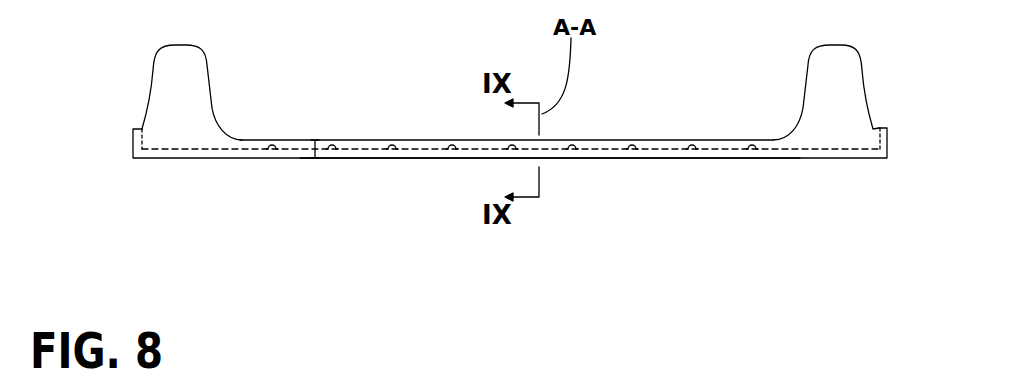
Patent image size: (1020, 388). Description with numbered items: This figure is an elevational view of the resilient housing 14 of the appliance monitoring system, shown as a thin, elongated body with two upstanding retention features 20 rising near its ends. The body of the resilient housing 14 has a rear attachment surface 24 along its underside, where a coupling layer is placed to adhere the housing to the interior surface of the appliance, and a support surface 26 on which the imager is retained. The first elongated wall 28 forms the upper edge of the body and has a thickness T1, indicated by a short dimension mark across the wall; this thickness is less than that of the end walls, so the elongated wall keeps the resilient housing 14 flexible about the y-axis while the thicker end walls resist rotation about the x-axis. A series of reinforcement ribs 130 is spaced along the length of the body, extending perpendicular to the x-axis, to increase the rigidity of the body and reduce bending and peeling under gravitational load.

The resilient housing 14 is at (133, 153).
The retention features 20 is at (172, 87).
The rear attachment surface 24 is at (662, 158).
The support surface 26 is at (613, 140).
The first elongated wall 28 is at (378, 140).
The reinforcement ribs 130 is at (330, 140).
The thickness of the elongated walls T1 is at (312, 150).